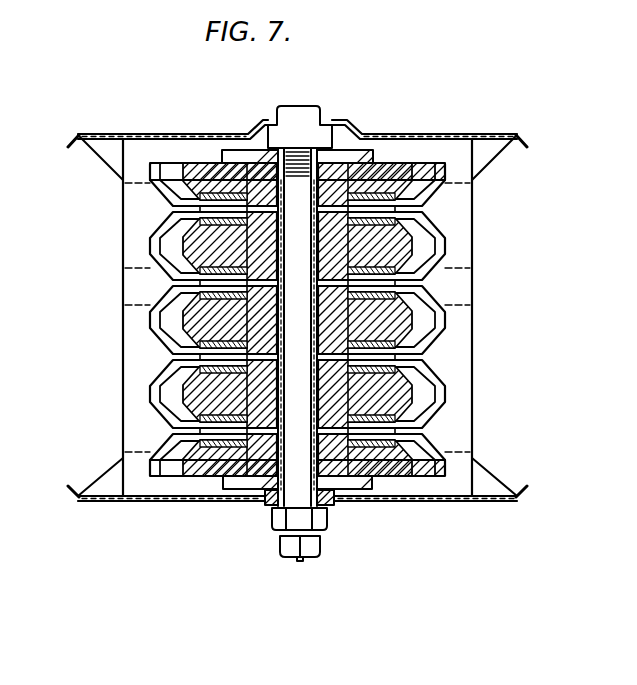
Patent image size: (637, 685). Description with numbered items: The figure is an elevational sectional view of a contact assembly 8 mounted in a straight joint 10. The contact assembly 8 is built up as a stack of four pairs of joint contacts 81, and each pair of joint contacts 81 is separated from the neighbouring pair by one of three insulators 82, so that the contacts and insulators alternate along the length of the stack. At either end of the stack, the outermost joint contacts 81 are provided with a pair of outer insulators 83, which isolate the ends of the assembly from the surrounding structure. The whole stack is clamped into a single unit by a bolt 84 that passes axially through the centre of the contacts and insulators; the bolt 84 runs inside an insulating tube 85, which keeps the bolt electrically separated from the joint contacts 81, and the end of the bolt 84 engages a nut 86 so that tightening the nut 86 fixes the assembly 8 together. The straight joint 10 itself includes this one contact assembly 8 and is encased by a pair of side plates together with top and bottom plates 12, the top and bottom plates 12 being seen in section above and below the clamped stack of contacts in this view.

The contact assembly 8 is at (104, 291).
The straight joint 10 is at (151, 518).
The top and bottom plates 12 is at (520, 498).
The joint contacts 81 is at (405, 184).
The insulators 82 is at (428, 244).
The outer insulators 83 is at (407, 167).
The bolt 84 is at (268, 499).
The insulating tube 85 is at (306, 478).
The nut 86 is at (305, 118).